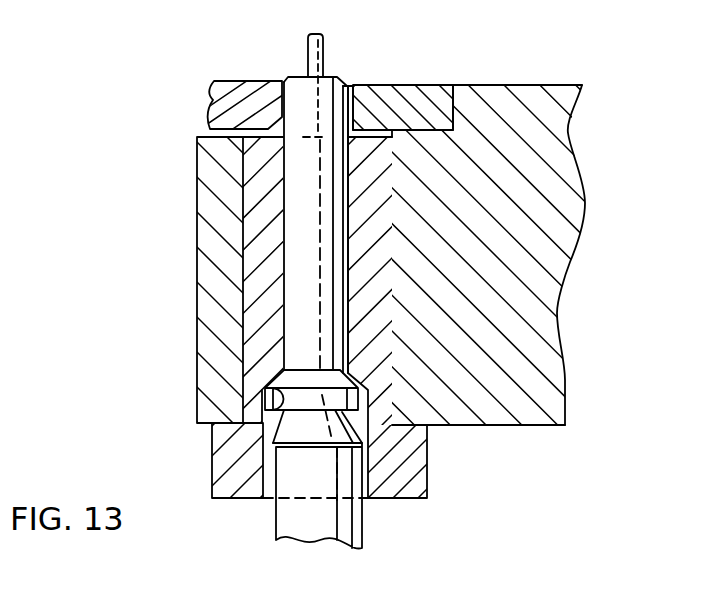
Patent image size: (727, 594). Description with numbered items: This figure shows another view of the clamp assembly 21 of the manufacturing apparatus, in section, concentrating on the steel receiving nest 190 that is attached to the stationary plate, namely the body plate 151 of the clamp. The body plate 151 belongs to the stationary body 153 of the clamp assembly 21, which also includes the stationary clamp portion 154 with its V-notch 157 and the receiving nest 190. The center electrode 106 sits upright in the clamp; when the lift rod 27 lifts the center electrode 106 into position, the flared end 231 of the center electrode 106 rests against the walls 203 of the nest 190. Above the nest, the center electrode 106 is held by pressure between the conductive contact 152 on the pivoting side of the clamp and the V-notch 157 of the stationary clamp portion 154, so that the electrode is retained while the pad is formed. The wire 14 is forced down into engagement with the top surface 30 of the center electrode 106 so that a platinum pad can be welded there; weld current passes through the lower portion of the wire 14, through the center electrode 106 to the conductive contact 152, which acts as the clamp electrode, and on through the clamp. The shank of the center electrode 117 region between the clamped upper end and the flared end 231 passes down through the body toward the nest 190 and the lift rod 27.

The clamp assembly 21 is at (243, 45).
The conductive contact 152 is at (240, 82).
The top surface 30 is at (300, 77).
The wire 14 is at (323, 51).
The V-notch 157 is at (350, 97).
The stationary clamp portion 154 is at (400, 89).
The stationary body 153 is at (554, 87).
The body plate 151 is at (553, 160).
The valve pin body 117 is at (282, 120).
The center electrode 106 is at (283, 350).
The walls 203 is at (275, 398).
The flared end 231 is at (318, 398).
The lift rod 27 is at (353, 528).
The receiving nest 190 is at (432, 463).